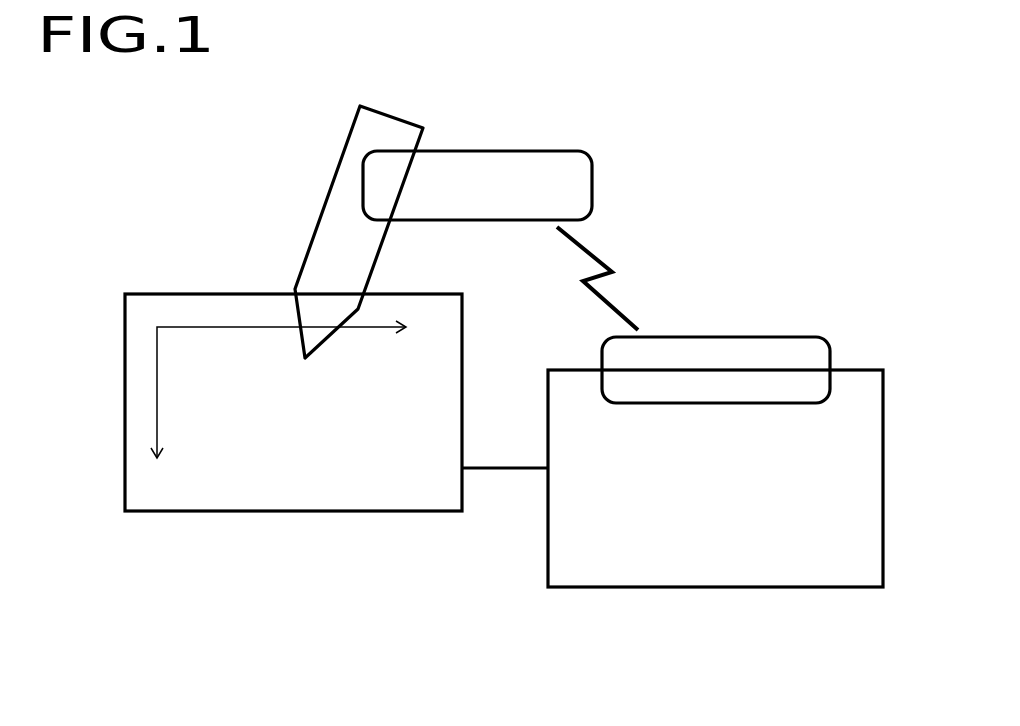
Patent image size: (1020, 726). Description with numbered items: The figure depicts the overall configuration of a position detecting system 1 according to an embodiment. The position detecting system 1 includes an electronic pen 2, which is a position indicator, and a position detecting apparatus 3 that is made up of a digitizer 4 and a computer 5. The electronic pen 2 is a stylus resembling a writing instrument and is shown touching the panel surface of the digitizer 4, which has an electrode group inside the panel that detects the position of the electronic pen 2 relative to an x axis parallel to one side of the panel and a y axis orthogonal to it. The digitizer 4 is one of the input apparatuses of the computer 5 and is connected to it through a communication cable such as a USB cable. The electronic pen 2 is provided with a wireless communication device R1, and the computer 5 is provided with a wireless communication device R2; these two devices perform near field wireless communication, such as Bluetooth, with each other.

The position detecting system 1 is at (710, 167).
The electronic pen 2 is at (328, 217).
The position detecting apparatus 3 is at (504, 483).
The digitizer 4 is at (418, 500).
The computer 5 is at (592, 575).
The wireless communication device R1 is at (492, 152).
The wireless communication device R2 is at (740, 337).